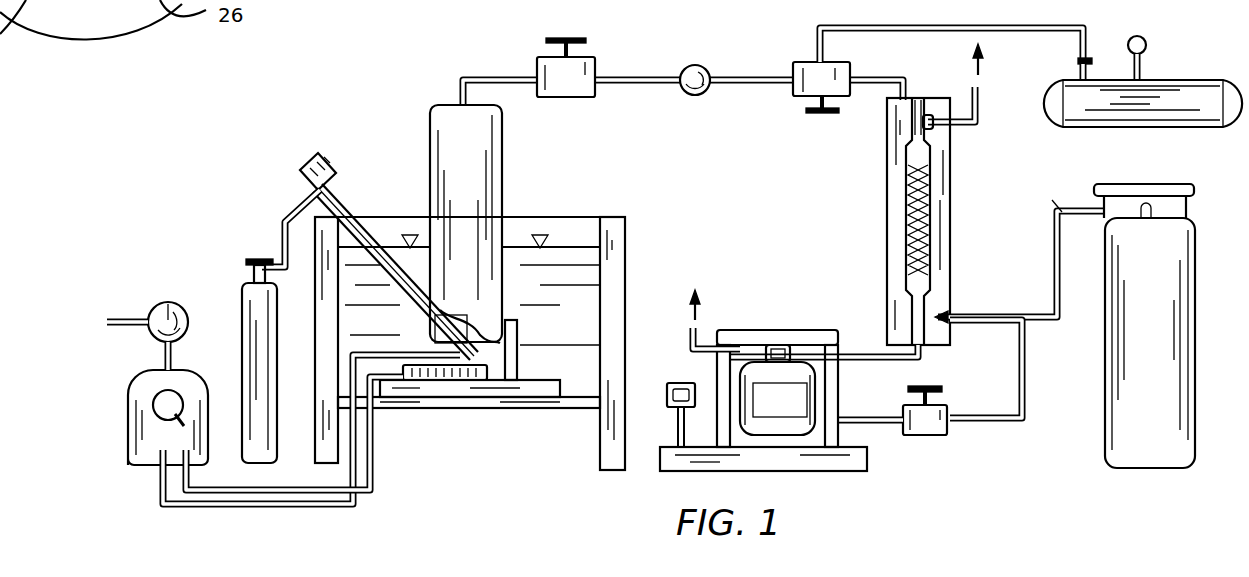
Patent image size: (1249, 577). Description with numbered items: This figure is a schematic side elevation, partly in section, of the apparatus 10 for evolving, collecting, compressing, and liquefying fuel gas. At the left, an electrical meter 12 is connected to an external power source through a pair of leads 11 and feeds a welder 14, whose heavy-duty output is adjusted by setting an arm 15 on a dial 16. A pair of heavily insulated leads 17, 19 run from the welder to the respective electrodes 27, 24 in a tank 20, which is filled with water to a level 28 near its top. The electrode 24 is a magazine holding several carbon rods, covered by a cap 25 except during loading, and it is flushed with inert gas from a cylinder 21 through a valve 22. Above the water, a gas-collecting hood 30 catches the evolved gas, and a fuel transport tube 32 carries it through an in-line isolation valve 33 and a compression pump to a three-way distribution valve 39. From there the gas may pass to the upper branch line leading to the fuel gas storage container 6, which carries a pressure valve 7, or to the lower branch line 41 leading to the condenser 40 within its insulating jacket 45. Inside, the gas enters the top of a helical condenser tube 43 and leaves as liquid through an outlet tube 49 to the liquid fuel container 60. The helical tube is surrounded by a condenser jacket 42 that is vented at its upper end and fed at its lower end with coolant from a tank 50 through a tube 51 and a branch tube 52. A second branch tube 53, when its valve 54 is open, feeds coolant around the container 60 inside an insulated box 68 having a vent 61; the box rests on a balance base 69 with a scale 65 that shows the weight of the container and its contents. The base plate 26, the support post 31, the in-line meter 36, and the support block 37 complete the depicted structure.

The fuel gas storage container 6 is at (1050, 100).
The pressure valve 7 is at (1145, 42).
The apparatus 10 is at (918, 450).
The pair of leads 11 is at (105, 322).
The electrical meter 12 is at (160, 310).
The welder 14 is at (124, 437).
The arm 15 is at (182, 422).
The dial 16 is at (160, 405).
The heavily insulated lead 17 is at (196, 504).
The heavily insulated lead 19 is at (335, 490).
The tank 20 is at (610, 268).
The cylinder 21 is at (258, 318).
The valve 22 is at (255, 260).
The magazine 24 is at (345, 205).
The cap 25 is at (318, 152).
The base plate 26 is at (524, 408).
The electrode 27 is at (448, 375).
The level 28 is at (575, 247).
The gas-collecting hood 30 is at (480, 152).
The support post 31 is at (517, 347).
The fuel transport tube 32 is at (462, 80).
The in-line isolation valve 33 is at (540, 64).
The flow meter 36 is at (693, 65).
The support block 37 is at (490, 395).
The three-way distribution valve 39 is at (800, 65).
The condenser 40 is at (900, 221).
The lower branch line 41 is at (895, 72).
The condenser jacket 42 is at (905, 276).
The helical condenser tube 43 is at (930, 222).
The insulating jacket 45 is at (897, 110).
The outlet tube 49 is at (850, 352).
The tank 50 is at (1120, 440).
The tube 51 is at (1052, 205).
The branch tube 52 is at (1040, 312).
The branch tube 53 is at (1028, 330).
The valve 54 is at (950, 432).
The liquid fuel container 60 is at (780, 405).
The vent 61 is at (688, 337).
The scale 65 is at (660, 383).
The insulated box 68 is at (848, 373).
The balance base 69 is at (865, 458).